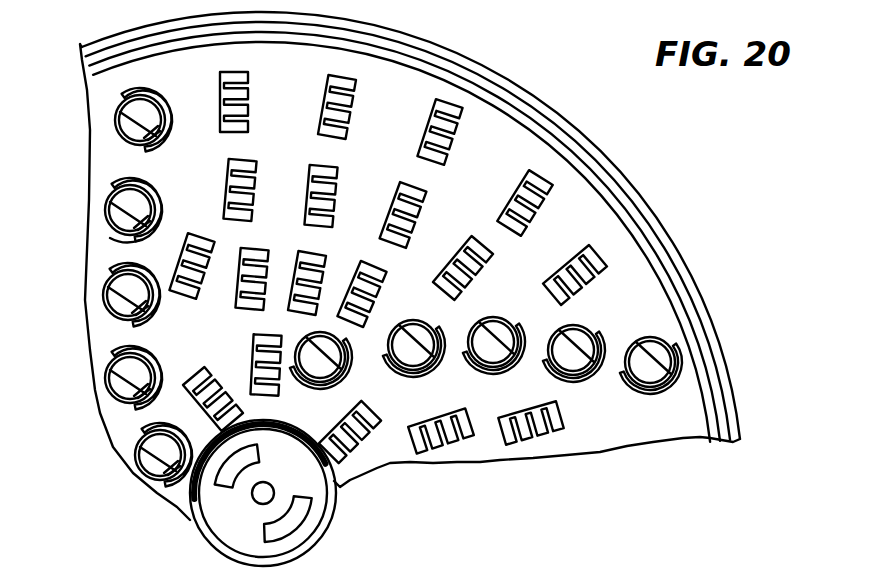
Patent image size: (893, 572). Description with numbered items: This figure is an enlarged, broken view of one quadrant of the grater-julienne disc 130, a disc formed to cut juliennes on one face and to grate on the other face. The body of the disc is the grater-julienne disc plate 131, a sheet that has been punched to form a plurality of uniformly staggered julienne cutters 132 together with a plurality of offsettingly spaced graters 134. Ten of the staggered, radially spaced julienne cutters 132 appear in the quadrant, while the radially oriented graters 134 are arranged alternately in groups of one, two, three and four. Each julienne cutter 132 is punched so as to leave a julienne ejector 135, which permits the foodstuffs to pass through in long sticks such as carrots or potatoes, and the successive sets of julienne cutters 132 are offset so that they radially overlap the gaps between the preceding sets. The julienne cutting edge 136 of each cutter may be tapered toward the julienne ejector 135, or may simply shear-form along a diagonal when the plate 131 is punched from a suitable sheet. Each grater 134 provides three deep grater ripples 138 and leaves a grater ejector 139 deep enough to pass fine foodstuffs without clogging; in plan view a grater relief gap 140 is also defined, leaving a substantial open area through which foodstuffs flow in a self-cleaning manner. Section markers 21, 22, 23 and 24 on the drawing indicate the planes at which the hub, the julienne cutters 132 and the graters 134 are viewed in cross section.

The grater-julienne disc 130 is at (608, 137).
The grater-julienne disc plate 131 is at (470, 108).
The julienne cutters 132 is at (112, 206).
The graters 134 is at (331, 229).
The julienne ejector 135 is at (113, 243).
The julienne cutting edge 136 is at (153, 200).
The grater ripples 138 is at (331, 191).
The grater ejector 139 is at (312, 199).
The grater relief gap 140 is at (423, 138).
The section line 21 is at (400, 410).
The section line 22 is at (155, 72).
The section line 23 is at (643, 322).
The section line 24 is at (210, 62).